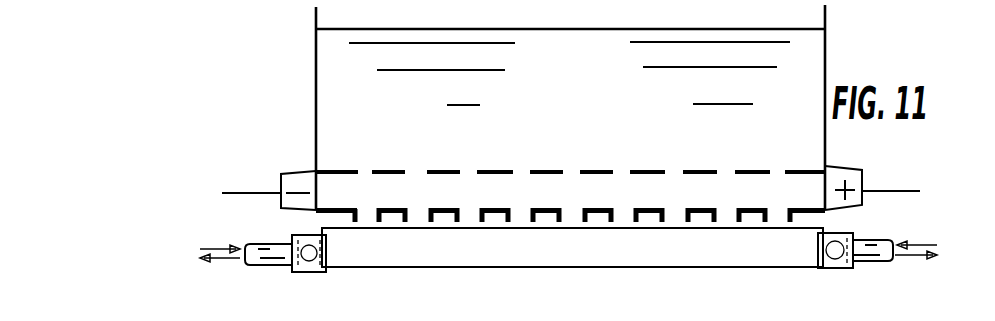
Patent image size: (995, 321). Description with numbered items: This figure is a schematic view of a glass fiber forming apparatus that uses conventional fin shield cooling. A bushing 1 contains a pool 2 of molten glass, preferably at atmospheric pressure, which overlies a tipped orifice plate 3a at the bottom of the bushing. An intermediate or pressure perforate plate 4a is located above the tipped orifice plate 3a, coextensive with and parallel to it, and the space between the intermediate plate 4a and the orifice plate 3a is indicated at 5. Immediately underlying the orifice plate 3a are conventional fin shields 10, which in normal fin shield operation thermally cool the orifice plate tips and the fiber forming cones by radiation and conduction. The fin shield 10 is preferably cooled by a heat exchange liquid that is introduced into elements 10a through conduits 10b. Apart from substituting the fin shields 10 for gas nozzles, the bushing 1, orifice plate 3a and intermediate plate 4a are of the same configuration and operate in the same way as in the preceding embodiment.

The bushing 1 is at (825, 57).
The pool of molten glass 2 is at (576, 119).
The tipped orifice plate 3a is at (386, 210).
The intermediate plate 4a is at (394, 136).
The space between the pressure plate and the orifice plate 5 is at (472, 194).
The fin shields 10 is at (552, 250).
The elements 10a is at (296, 272).
The conduits 10b is at (272, 266).